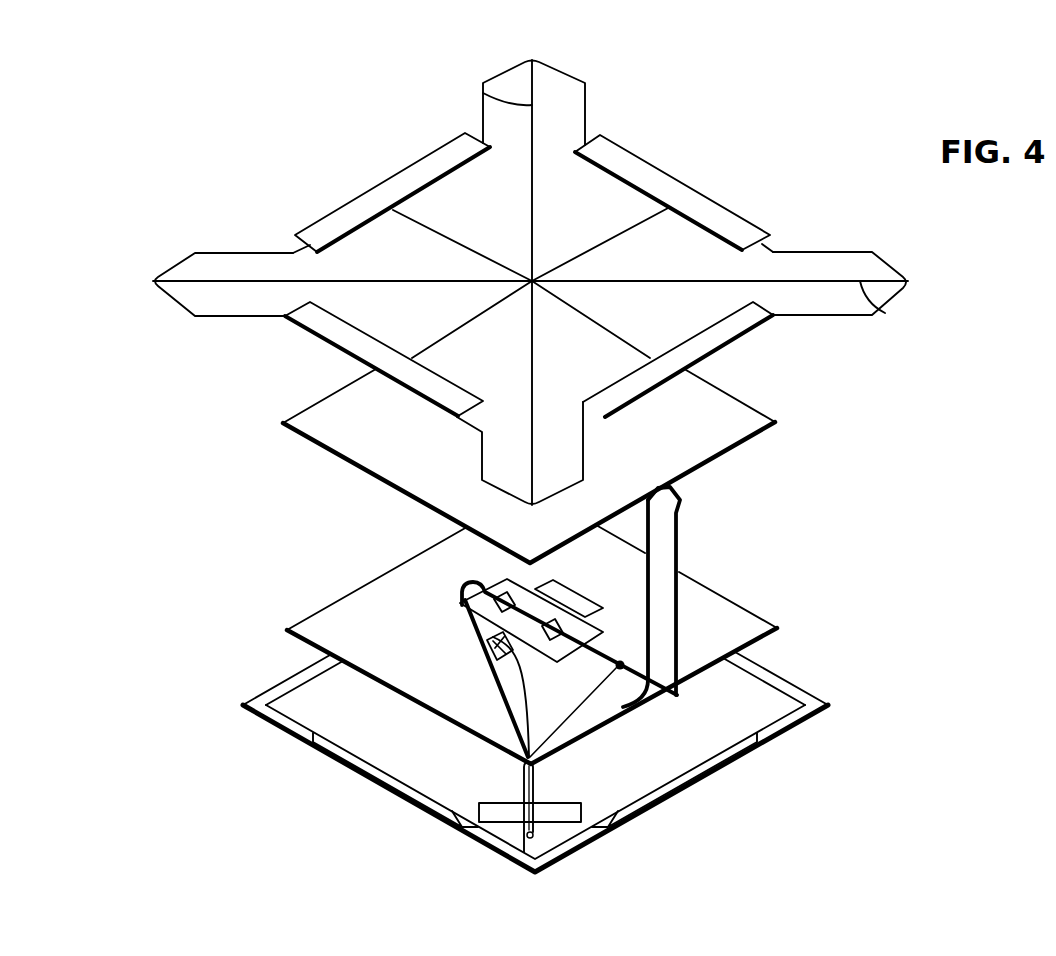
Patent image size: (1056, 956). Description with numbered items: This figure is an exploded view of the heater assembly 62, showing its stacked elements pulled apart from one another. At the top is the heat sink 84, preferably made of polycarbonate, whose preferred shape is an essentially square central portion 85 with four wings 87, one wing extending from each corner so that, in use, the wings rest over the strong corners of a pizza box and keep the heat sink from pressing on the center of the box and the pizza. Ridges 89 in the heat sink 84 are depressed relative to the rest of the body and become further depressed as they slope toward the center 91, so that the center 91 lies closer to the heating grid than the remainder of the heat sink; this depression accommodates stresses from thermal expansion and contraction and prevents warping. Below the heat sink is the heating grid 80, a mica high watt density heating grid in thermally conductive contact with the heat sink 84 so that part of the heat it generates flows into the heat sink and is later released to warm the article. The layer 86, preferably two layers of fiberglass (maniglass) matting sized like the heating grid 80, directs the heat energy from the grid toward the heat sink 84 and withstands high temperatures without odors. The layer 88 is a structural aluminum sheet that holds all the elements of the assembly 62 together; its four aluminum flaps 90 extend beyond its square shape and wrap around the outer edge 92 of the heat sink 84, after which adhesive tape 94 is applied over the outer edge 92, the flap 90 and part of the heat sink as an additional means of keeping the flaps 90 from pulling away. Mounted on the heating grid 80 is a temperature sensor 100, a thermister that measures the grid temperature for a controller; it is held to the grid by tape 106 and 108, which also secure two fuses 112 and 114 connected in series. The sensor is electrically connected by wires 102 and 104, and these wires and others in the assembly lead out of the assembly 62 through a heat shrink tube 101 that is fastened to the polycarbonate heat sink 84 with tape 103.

The assembly 62 is at (104, 470).
The heating grid 80 is at (742, 408).
The heat sink 84 is at (770, 267).
The square central portion 85 is at (657, 248).
The layer 86 is at (738, 612).
The wings 87 is at (562, 80).
The layer 88 is at (535, 762).
The ridges 89 is at (681, 205).
The flaps 90 is at (373, 772).
The center 91 is at (534, 276).
The outer edge 92 is at (518, 270).
The adhesive tape 94 is at (425, 167).
The temperature sensor 100 is at (483, 654).
The heat shrink tube 101 is at (524, 783).
The wire 102 is at (527, 680).
The tape 103 is at (562, 812).
The wire 104 is at (507, 694).
The tape 106 is at (552, 625).
The tape 108 is at (573, 598).
The fuse 112 is at (505, 592).
The fuse 114 is at (556, 645).